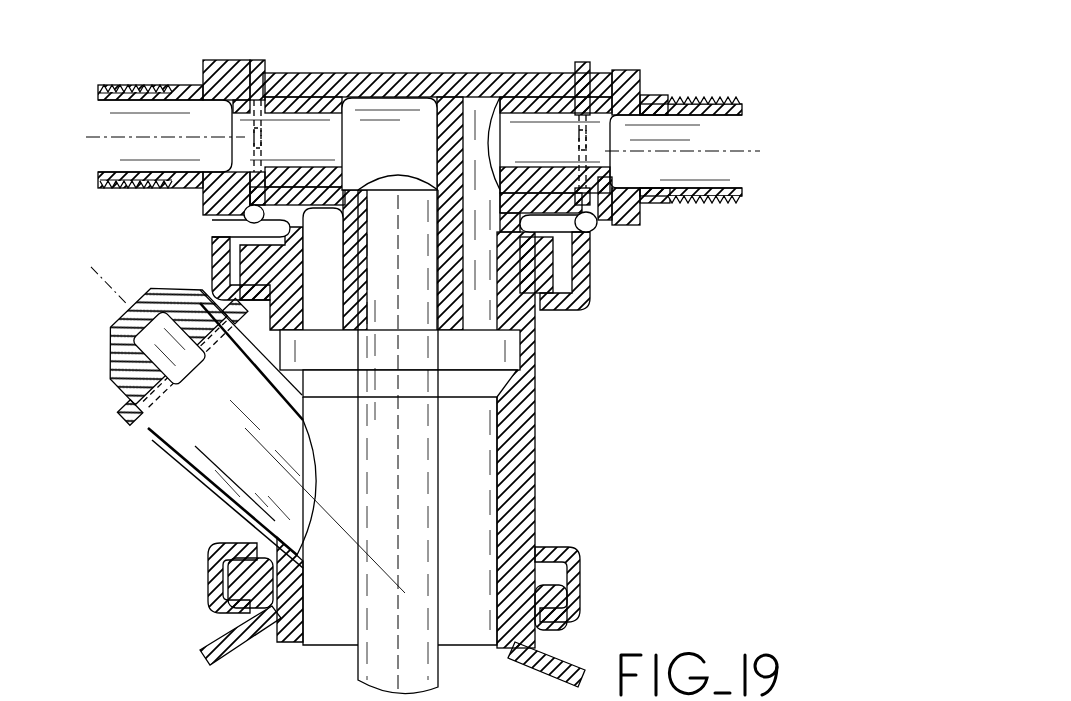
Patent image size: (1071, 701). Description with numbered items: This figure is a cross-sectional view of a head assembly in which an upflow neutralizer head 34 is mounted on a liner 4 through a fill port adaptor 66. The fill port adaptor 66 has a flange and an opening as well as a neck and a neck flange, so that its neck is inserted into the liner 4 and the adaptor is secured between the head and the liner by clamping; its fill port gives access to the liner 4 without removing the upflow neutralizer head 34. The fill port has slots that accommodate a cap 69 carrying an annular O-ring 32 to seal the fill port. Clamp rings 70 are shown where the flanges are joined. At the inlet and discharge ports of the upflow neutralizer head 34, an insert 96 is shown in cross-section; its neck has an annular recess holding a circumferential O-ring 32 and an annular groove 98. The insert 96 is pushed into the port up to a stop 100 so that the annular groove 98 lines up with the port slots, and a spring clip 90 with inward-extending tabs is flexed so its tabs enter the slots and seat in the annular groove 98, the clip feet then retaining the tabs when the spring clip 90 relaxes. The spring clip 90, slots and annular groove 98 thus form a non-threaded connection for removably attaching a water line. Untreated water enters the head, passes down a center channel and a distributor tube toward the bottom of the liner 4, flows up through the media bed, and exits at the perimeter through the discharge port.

The liner 4 is at (573, 665).
The O-ring 32 is at (178, 413).
The upflow neutralizer head 34 is at (410, 70).
The fill port adaptor 66 is at (544, 411).
The cap 69 is at (122, 358).
The retaining clip 70 is at (592, 284).
The spring clip 90 is at (264, 60).
The insert 96 is at (166, 190).
The annular groove 98 is at (612, 181).
The stop 100 is at (636, 69).